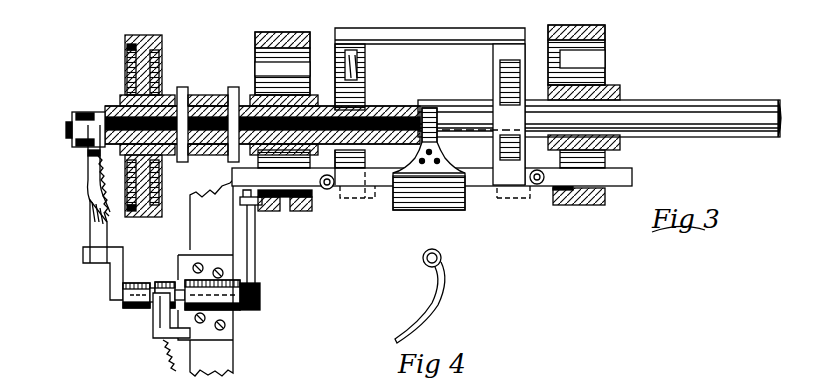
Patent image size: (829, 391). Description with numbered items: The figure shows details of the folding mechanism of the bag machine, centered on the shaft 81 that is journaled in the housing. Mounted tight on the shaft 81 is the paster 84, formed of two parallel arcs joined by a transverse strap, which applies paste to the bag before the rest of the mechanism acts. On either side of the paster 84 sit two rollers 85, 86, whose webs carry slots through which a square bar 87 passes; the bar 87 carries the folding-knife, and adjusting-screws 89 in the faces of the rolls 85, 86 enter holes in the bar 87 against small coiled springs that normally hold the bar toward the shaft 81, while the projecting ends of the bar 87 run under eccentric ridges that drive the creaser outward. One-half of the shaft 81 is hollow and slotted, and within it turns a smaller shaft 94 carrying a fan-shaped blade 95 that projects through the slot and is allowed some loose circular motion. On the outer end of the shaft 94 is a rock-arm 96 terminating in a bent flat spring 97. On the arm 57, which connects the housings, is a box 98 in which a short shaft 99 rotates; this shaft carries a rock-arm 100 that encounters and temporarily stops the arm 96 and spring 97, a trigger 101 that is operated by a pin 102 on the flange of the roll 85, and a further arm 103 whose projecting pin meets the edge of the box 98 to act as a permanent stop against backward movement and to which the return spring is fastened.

In FIG. 3, the arm 57 is at (211, 278).
In FIG. 3, the shaft 81 is at (599, 131).
In FIG. 3, the paster 84 is at (430, 93).
In FIG. 3, the roller 85 is at (284, 81).
In FIG. 3, the roller 86 is at (584, 75).
In FIG. 3, the square bar 87 is at (432, 174).
In FIG. 3, the adjusting-screw 89 is at (292, 212).
In FIG. 3, the shaft 94 is at (66, 130).
In FIG. 3, the fan-shaped blade 95 is at (429, 177).
In FIG. 4, the fan-shaped blade 95 is at (420, 296).
In FIG. 3, the rock-arm 96 is at (104, 170).
In FIG. 3, the bent flat spring 97 is at (79, 231).
In FIG. 3, the box 98 is at (212, 265).
In FIG. 3, the short shaft 99 is at (258, 297).
In FIG. 3, the rock-arm 100 is at (114, 282).
In FIG. 3, the trigger 101 is at (256, 268).
In FIG. 3, the pin 102 is at (252, 225).
In FIG. 3, the arm 103 is at (153, 336).